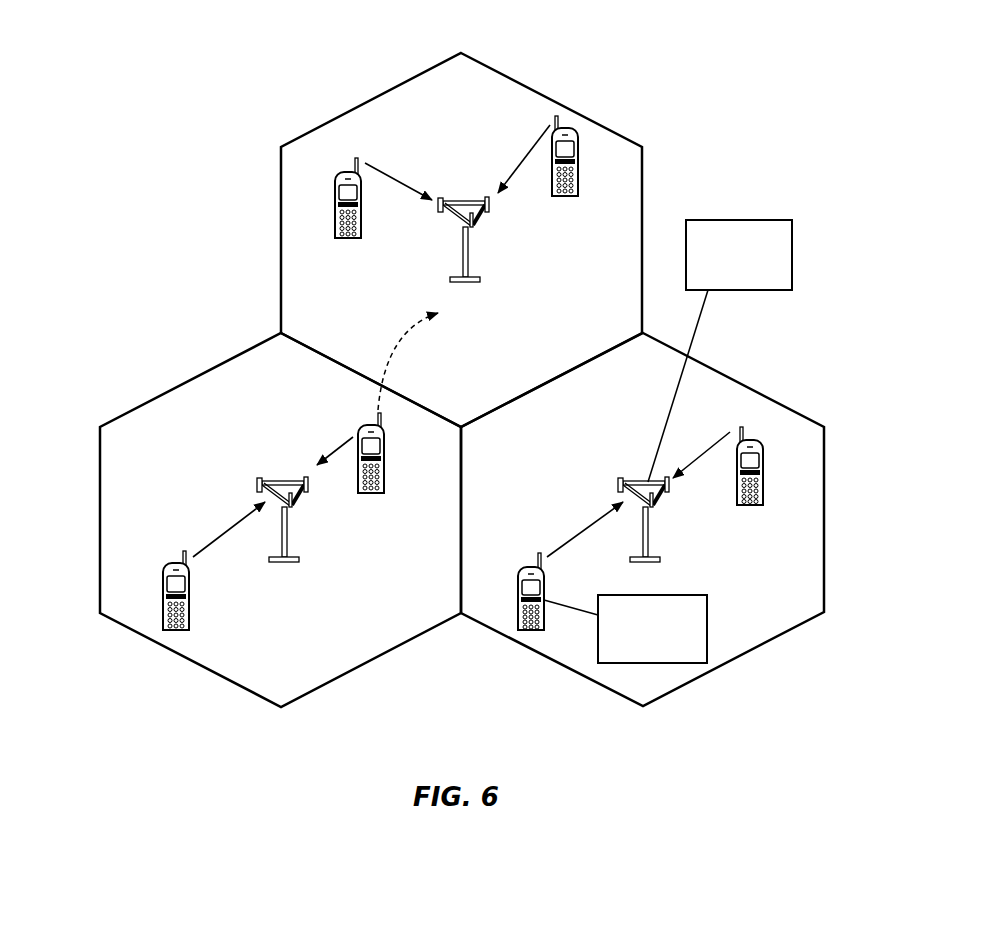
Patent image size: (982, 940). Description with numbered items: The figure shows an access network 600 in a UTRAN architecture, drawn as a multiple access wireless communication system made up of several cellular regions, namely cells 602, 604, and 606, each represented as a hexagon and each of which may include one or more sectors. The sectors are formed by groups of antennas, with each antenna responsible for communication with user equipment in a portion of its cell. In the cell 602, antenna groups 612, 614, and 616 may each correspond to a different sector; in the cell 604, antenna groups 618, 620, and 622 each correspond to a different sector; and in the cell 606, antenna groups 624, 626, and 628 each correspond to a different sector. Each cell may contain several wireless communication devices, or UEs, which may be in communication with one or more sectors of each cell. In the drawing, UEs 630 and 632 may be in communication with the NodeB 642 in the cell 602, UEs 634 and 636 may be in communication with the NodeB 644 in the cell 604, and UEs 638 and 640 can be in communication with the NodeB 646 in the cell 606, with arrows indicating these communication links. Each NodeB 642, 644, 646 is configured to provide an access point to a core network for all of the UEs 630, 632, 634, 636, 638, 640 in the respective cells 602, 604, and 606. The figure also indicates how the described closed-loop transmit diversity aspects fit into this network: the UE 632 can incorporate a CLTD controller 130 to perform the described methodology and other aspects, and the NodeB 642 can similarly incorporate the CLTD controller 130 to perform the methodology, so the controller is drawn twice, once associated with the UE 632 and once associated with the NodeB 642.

The access network 600 is at (462, 367).
The cell 602 is at (733, 377).
The cell 604 is at (178, 380).
The cell 606 is at (540, 90).
The CLTD controller 130 is at (743, 220).
The antenna group 612 is at (595, 474).
The antenna group 614 is at (677, 514).
The antenna group 616 is at (692, 493).
The antenna group 618 is at (314, 513).
The antenna group 620 is at (330, 494).
The antenna group 622 is at (233, 473).
The antenna group 624 is at (415, 218).
The antenna group 626 is at (496, 232).
The antenna group 628 is at (512, 210).
The UE 630 is at (748, 505).
The UE 632 is at (520, 570).
The UE 634 is at (385, 445).
The UE 636 is at (163, 585).
The UE 638 is at (348, 238).
The UE 640 is at (570, 198).
The NodeB 642 is at (643, 501).
The NodeB 644 is at (281, 501).
The NodeB 646 is at (463, 221).